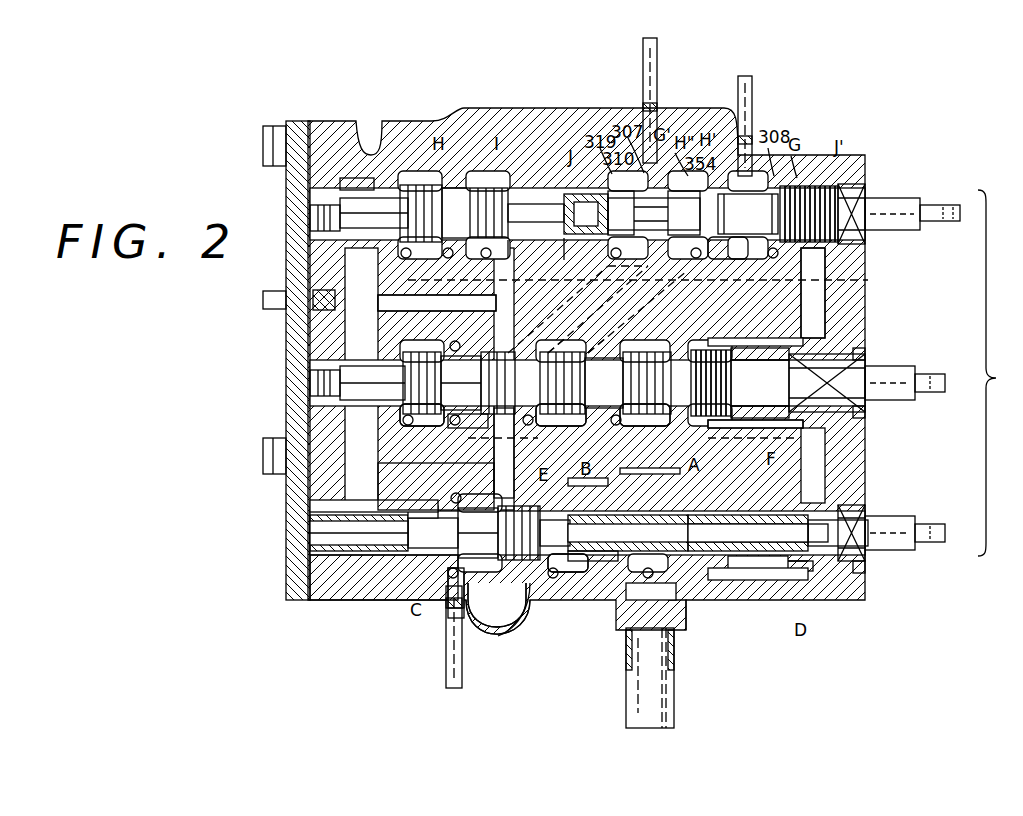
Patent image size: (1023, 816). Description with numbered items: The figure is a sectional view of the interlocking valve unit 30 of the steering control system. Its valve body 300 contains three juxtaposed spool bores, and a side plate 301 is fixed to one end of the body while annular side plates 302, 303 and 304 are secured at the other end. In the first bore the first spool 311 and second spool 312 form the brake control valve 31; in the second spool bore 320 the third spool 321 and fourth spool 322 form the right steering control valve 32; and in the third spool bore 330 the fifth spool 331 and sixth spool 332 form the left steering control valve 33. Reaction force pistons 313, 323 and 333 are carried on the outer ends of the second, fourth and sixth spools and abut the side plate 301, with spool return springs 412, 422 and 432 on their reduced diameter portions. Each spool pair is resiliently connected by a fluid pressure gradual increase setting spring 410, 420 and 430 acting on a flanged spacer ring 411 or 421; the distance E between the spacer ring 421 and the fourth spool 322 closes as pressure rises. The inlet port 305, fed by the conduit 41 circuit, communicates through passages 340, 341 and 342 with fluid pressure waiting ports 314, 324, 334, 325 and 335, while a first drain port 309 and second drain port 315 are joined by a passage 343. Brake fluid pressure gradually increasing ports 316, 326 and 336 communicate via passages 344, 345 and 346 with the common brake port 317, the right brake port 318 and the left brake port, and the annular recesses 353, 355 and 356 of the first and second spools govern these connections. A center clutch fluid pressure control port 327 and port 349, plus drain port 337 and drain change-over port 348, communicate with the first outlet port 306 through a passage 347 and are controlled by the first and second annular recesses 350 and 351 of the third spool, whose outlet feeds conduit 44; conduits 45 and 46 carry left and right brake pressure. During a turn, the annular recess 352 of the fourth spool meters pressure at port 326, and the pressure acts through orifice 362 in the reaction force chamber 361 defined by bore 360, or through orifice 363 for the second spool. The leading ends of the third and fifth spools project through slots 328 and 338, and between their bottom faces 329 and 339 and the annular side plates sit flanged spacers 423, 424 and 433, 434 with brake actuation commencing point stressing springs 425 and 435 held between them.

The interlocking valve unit 30 is at (996, 373).
The brake control valve 31 is at (878, 182).
The right steering control valve 32 is at (896, 524).
The left steering control valve 33 is at (894, 365).
The hydraulic fluid conduit 41 is at (438, 655).
The conduit 44 is at (620, 675).
The conduit 45 is at (635, 46).
The conduit 46 is at (744, 104).
The valve body 300 is at (710, 130).
The side plate 301 is at (290, 125).
The annular side plate 302 is at (845, 176).
The annular side plate 303 is at (850, 506).
The annular side plate 304 is at (852, 344).
The inlet port 305 is at (455, 600).
The first outlet port 306 is at (676, 590).
The first drain port 309 is at (520, 590).
The first spool 311 is at (783, 260).
The second spool 312 is at (522, 254).
The reaction force piston 313 is at (302, 208).
The fluid pressure waiting port 314 is at (466, 178).
The second drain port 315 is at (305, 280).
The brake fluid pressure gradually increasing port 316 is at (410, 178).
The port common for the left and right brakes 317 is at (712, 248).
The port for the right brake 318 is at (804, 180).
The second spool bore 320 is at (575, 565).
The third spool 321 is at (726, 574).
The fourth spool 322 is at (509, 556).
The reaction force piston 323 is at (302, 528).
The fluid pressure waiting port 324 is at (468, 500).
The fluid pressure waiting port 325 is at (585, 565).
The brake fluid pressure gradually increasing port 326 is at (436, 481).
The center clutch fluid pressure control port 327 is at (586, 478).
The slot 328 is at (854, 566).
The inner bottom face 329 is at (758, 564).
The third spool bore 330 is at (596, 350).
The fifth spool 331 is at (755, 441).
The sixth spool 332 is at (509, 453).
The reaction force piston 333 is at (302, 378).
The fluid pressure waiting port 334 is at (464, 348).
The fluid pressure waiting port 335 is at (612, 344).
The brake fluid pressure gradually increasing port 336 is at (413, 373).
The drain port 337 is at (578, 412).
The slot 338 is at (854, 410).
The inner bottom face 339 is at (700, 342).
The passage 340 is at (420, 418).
The passage 341 is at (450, 330).
The passage 342 is at (462, 420).
The passage 343 is at (398, 290).
The passage 344 is at (634, 281).
The passage 345 is at (625, 329).
The passage 346 is at (581, 321).
The passage 347 is at (651, 601).
The drain change-over port 348 is at (645, 418).
The center clutch fluid pressure control port 349 is at (650, 481).
The first annular recess 350 is at (745, 533).
The second annular recess 351 is at (698, 533).
The annular recess 352 is at (497, 605).
The first annular recess 353 is at (748, 214).
The third annular recess 355 is at (654, 213).
The annular recess 356 is at (475, 207).
The bore 360 is at (388, 568).
The reaction force chamber 361 is at (400, 514).
The orifice 362 is at (420, 498).
The orifice 363 is at (374, 213).
The fluid pressure gradual increase setting spring 410 is at (574, 254).
The flanged spacer ring 411 is at (542, 188).
The spool return spring 412 is at (346, 182).
The fluid pressure gradual increase setting spring 420 is at (530, 575).
The flanged spacer ring 421 is at (532, 514).
The spool return spring 422 is at (326, 560).
The second spacer 423 is at (812, 564).
The first spacer 424 is at (803, 533).
The brake actuation commencing point stressing spring 425 is at (775, 564).
The fluid pressure gradual increase setting spring 430 is at (544, 344).
The spool return spring 432 is at (364, 358).
The second spacer 433 is at (818, 346).
The first spacer 434 is at (736, 342).
The brake actuation commencing point stressing spring 435 is at (762, 330).